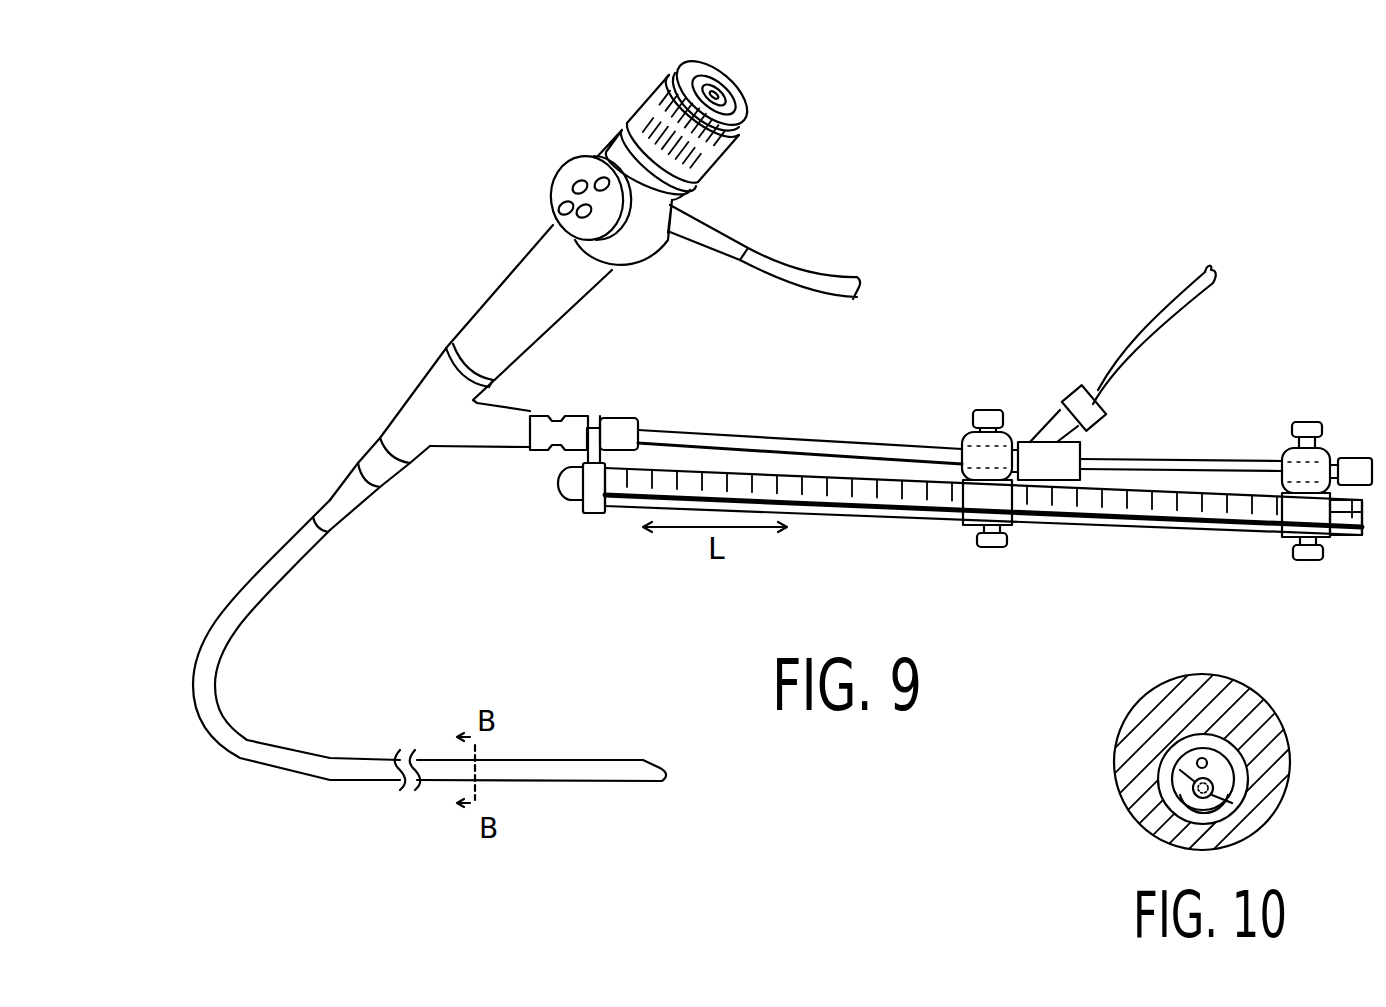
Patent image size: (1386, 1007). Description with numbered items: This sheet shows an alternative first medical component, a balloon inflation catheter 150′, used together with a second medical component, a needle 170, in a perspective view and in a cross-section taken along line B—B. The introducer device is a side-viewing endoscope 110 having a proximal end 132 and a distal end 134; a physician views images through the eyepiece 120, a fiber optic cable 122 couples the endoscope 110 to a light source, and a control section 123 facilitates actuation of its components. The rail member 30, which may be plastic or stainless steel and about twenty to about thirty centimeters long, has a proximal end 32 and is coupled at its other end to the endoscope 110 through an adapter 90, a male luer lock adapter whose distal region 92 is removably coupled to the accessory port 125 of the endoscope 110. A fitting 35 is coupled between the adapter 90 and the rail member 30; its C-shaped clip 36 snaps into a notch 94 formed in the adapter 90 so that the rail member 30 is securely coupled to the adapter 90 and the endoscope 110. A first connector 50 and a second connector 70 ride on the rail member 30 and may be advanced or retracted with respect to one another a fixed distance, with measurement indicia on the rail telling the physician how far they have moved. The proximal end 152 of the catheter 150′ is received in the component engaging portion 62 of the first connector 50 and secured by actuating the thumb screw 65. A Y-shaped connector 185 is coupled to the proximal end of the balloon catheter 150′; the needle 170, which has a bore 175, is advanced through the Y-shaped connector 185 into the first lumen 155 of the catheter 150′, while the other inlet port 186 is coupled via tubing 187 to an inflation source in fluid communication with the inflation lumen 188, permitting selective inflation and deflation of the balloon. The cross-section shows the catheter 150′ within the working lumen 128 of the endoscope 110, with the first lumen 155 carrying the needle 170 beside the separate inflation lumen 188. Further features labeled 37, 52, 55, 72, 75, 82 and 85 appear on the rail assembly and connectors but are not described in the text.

In FIG. 9, the endoscope 110 is at (455, 292).
In FIG. 10, the endoscope 110 is at (1255, 715).
In FIG. 9, the eyepiece 120 is at (714, 94).
In FIG. 9, the fiber optic cable 122 is at (803, 282).
In FIG. 9, the control section 123 is at (562, 190).
In FIG. 9, the accessory port 125 is at (506, 452).
In FIG. 9, the proximal end 132 is at (300, 522).
In FIG. 9, the distal end 134 is at (625, 750).
In FIG. 9, the adapter 90 is at (560, 408).
In FIG. 9, the notch 94 is at (597, 416).
In FIG. 9, the C-shaped clip 36 is at (615, 415).
In FIG. 9, the fitting 35 is at (594, 514).
In FIG. 9, the distal region 92 is at (553, 452).
In FIG. 9, the balloon inflation catheter 150′ is at (747, 433).
In FIG. 10, the balloon inflation catheter 150′ is at (1190, 775).
In FIG. 9, the proximal end 152 is at (958, 448).
In FIG. 9, the scale 37 is at (822, 505).
In FIG. 9, the rail member 30 is at (1135, 528).
In FIG. 9, the first connector 50 is at (957, 428).
In FIG. 9, the thumb screw 65 is at (992, 408).
In FIG. 9, the component engaging portion 62 is at (1012, 440).
In FIG. 9, the Y-shaped connector 185 is at (1055, 470).
In FIG. 9, the inlet port 186 is at (1076, 385).
In FIG. 9, the tubing 187 is at (1148, 330).
In FIG. 9, the needle 170 is at (1211, 439).
In FIG. 10, the needle 170 is at (1193, 790).
In FIG. 9, the clamp 52 is at (975, 512).
In FIG. 9, the clamp knob 55 is at (992, 548).
In FIG. 9, the second connector 70 is at (1280, 443).
In FIG. 9, the valve knob 85 is at (1307, 421).
In FIG. 9, the fitting 82 is at (1332, 448).
In FIG. 9, the distal clamp 72 is at (1290, 526).
In FIG. 9, the clamp knob 75 is at (1306, 561).
In FIG. 9, the proximal end 32 is at (1352, 542).
In FIG. 10, the working lumen 128 is at (1235, 768).
In FIG. 10, the inflation lumen 188 is at (1198, 758).
In FIG. 10, the first lumen 155 is at (1180, 812).
In FIG. 10, the bore 175 is at (1212, 800).